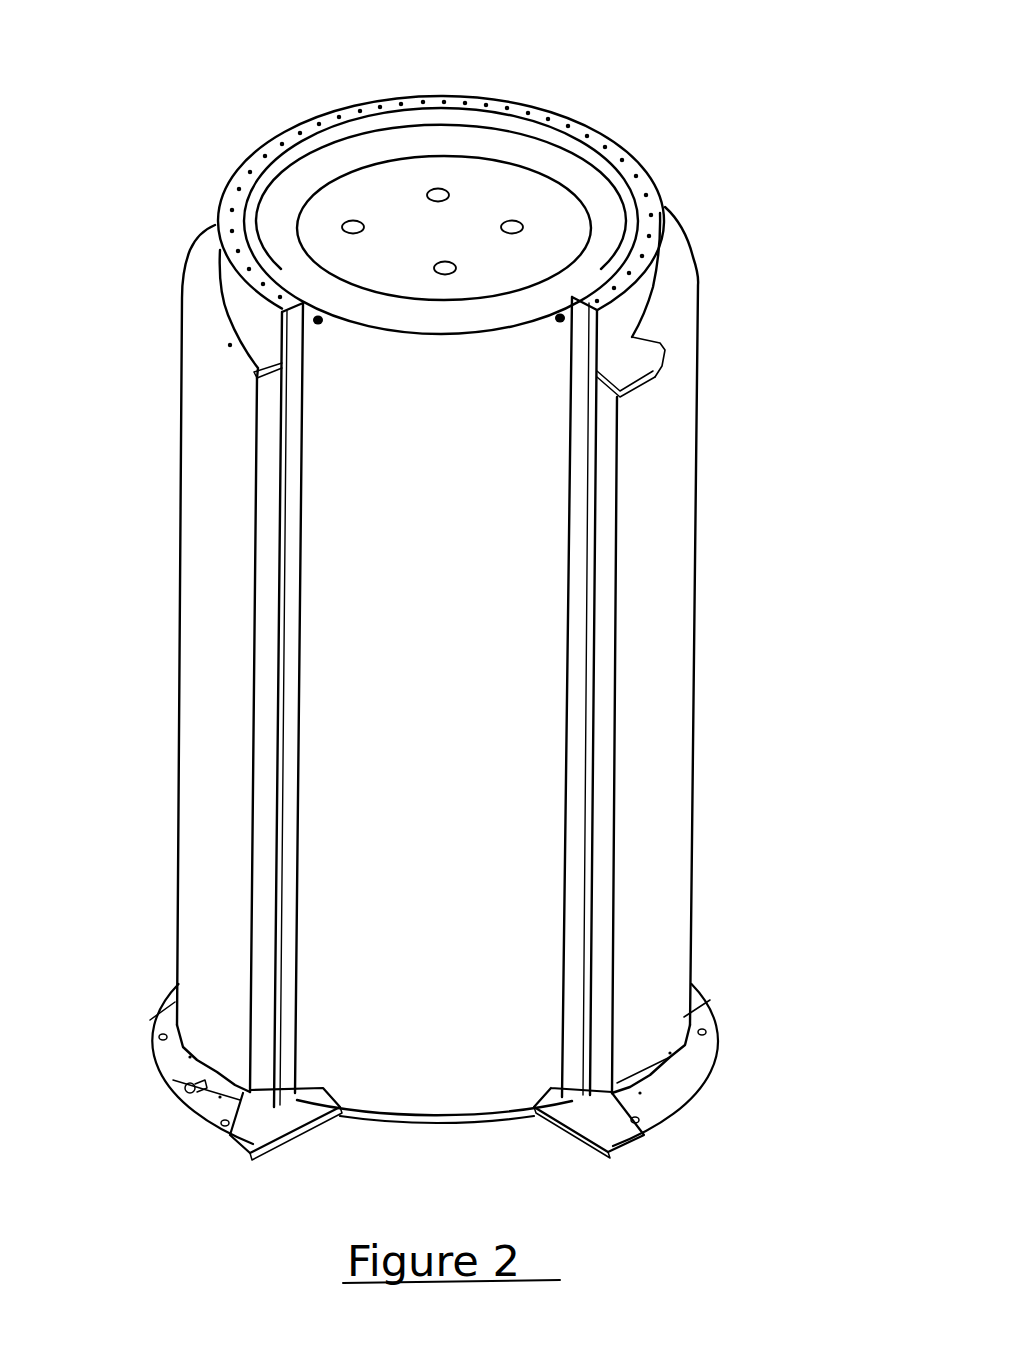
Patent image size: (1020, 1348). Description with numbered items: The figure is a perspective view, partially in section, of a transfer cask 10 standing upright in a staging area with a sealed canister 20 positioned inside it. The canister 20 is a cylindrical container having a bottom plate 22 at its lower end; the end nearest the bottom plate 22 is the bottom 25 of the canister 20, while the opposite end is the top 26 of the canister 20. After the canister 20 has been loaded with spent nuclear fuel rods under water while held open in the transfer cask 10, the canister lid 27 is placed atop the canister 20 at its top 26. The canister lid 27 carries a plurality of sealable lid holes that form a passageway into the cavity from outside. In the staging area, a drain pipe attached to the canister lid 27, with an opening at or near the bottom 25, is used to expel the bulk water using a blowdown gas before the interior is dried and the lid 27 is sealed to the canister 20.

The transfer cask 10 is at (712, 485).
The canister 20 is at (343, 542).
The bottom plate 22 is at (358, 1112).
The bottom of the canister 25 is at (496, 1056).
The top of the canister 26 is at (372, 364).
The canister lid 27 is at (507, 190).